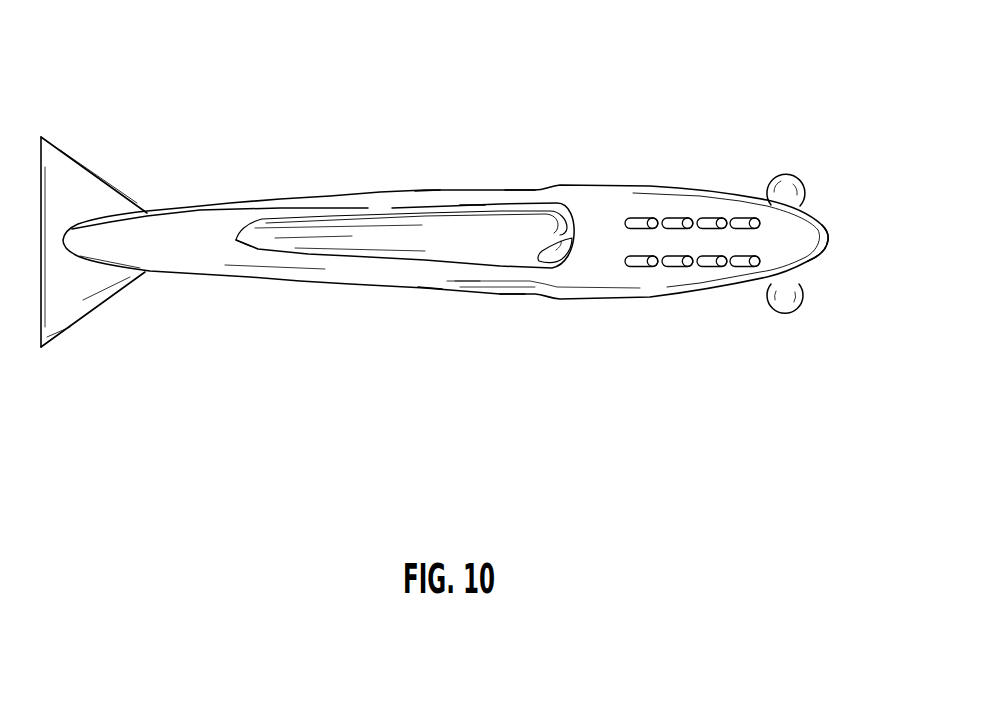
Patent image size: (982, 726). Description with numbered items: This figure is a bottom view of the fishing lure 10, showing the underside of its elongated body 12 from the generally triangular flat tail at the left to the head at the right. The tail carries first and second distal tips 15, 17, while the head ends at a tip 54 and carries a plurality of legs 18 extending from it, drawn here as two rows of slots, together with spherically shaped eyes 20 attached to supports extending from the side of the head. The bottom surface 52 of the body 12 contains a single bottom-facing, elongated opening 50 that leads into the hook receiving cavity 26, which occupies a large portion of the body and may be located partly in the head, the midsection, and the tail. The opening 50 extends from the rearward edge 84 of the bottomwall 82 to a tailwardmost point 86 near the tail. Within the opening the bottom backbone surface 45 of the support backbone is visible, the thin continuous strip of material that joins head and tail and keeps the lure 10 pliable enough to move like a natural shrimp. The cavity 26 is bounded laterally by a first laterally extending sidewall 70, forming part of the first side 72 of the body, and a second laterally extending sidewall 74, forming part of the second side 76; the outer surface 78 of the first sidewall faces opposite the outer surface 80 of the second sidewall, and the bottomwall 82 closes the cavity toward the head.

The fishing lure 10 is at (631, 106).
The body 12 is at (650, 290).
The first distal tip 15 is at (42, 137).
The second distal tip 17 is at (40, 347).
The legs 18 is at (712, 224).
The eyes 20 is at (787, 172).
The hook receiving cavity 26 is at (409, 247).
The bottom backbone surface 45 is at (476, 249).
The bottom-facing, elongated opening 50 is at (392, 208).
The bottom surface 52 is at (606, 221).
The tip of the head 54 is at (830, 237).
The first laterally extending sidewall 70 is at (513, 295).
The first side 72 is at (430, 297).
The second laterally extending sidewall 74 is at (518, 197).
The second side 76 is at (427, 200).
The outer surface of the first sidewall 78 is at (468, 290).
The outer surface of the second sidewall 80 is at (472, 200).
The bottomwall 82 is at (597, 260).
The rearward edge of the bottomwall 84 is at (538, 262).
The tailwardmost point 86 is at (232, 243).